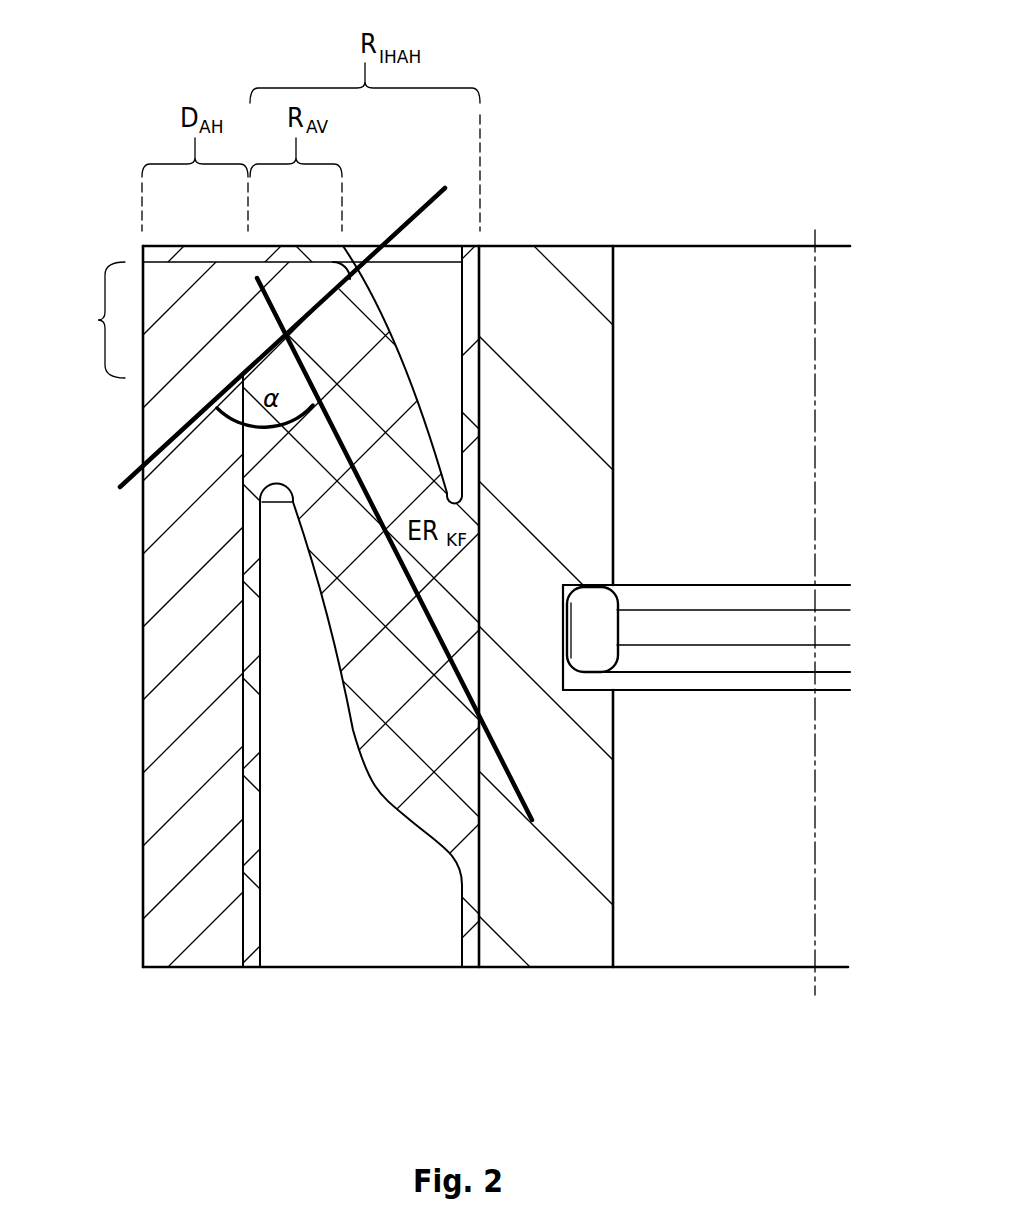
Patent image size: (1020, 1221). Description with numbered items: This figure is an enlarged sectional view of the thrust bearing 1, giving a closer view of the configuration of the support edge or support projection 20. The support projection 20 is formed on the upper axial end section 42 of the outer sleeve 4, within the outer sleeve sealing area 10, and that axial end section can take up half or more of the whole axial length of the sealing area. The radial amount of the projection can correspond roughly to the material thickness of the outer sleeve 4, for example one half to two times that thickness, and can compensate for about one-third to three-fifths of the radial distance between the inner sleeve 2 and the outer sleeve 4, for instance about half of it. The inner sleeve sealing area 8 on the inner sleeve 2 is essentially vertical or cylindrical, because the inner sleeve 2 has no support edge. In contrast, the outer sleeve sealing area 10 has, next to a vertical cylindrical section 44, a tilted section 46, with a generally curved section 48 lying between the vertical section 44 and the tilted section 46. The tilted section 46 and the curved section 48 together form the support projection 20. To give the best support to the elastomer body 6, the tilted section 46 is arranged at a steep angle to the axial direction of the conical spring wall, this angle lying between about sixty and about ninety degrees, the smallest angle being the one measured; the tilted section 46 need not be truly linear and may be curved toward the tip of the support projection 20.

The fuel injection system / assembly 1 is at (150, 83).
The inner sleeve 2 is at (550, 925).
The outer sleeve 4 is at (198, 928).
The elastomer body 6 is at (403, 732).
The inner sleeve sealing area 8 is at (483, 627).
The outer sleeve sealing area 10 is at (205, 373).
The support projection 20 is at (302, 297).
The upper axial end section 42 is at (98, 320).
The vertical cylindrical section 44 is at (247, 460).
The tilted section 46 is at (305, 325).
The curved section 48 is at (255, 355).